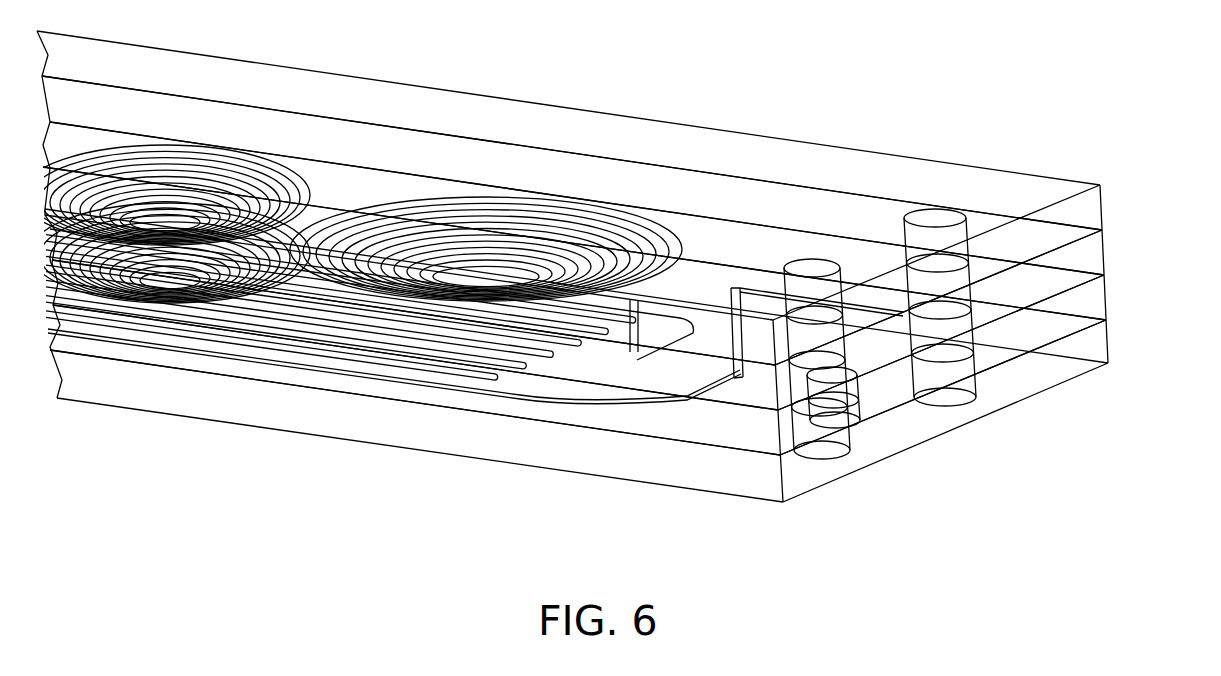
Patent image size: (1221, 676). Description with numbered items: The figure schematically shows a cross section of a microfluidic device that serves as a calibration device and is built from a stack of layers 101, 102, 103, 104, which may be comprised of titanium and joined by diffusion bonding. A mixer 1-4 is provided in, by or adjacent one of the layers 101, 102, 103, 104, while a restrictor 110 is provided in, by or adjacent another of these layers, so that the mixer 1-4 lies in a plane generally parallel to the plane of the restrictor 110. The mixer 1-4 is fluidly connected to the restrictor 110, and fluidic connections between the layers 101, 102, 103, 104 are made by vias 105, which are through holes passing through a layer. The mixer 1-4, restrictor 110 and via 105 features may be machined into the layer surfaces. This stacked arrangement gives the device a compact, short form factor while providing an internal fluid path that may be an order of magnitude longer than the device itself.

The mixer 1-4 is at (681, 247).
The layer 101 is at (1098, 210).
The layer 102 is at (1098, 255).
The layer 103 is at (1100, 300).
The layer 104 is at (1102, 345).
The via 105 is at (735, 372).
The restrictor 110 is at (513, 395).